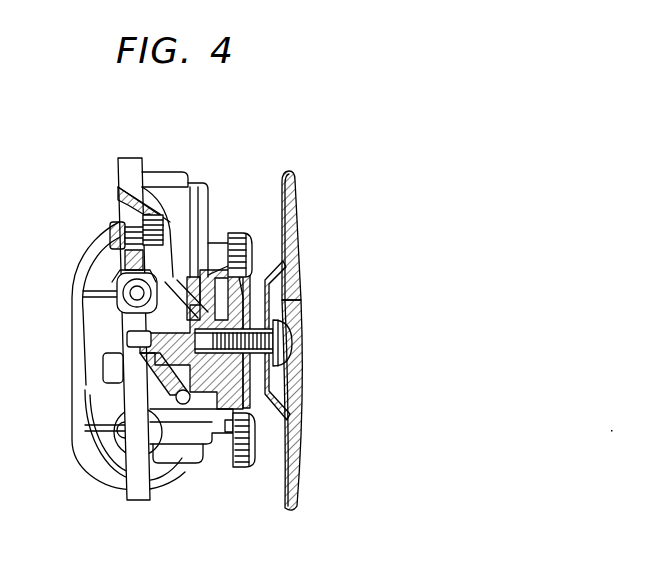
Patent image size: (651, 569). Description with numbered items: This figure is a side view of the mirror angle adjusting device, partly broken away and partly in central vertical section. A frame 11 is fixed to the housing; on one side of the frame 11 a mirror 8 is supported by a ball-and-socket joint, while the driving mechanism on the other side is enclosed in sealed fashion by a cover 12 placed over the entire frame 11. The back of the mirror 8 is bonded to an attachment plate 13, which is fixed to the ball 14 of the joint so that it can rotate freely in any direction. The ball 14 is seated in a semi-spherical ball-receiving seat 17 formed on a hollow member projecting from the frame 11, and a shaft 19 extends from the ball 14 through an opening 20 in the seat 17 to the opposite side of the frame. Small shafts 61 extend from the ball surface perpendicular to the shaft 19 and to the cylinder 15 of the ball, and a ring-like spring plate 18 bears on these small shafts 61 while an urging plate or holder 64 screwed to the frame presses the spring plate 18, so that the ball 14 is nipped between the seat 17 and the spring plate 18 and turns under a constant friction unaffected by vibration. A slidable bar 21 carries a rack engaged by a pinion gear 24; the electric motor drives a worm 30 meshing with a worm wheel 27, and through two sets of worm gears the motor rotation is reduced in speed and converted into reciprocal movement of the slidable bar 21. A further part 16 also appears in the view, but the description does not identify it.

The mirror 8 is at (298, 443).
The frame 11 is at (174, 171).
The cover 12 is at (93, 480).
The attachment plate 13 is at (284, 176).
The ball 14 is at (177, 472).
The cylinder 15 is at (263, 397).
The bolt 16 is at (282, 343).
The ball-receiving seat 17 is at (168, 245).
The spring plate 18 is at (248, 272).
The shaft 19 is at (125, 340).
The opening 20 is at (104, 352).
The slidable bar 21 is at (158, 205).
The pinion gear 24 is at (115, 236).
The worm wheel 27 is at (134, 270).
The worm 30 is at (116, 303).
The small shafts 61 is at (218, 412).
The urging plate 64 is at (234, 232).